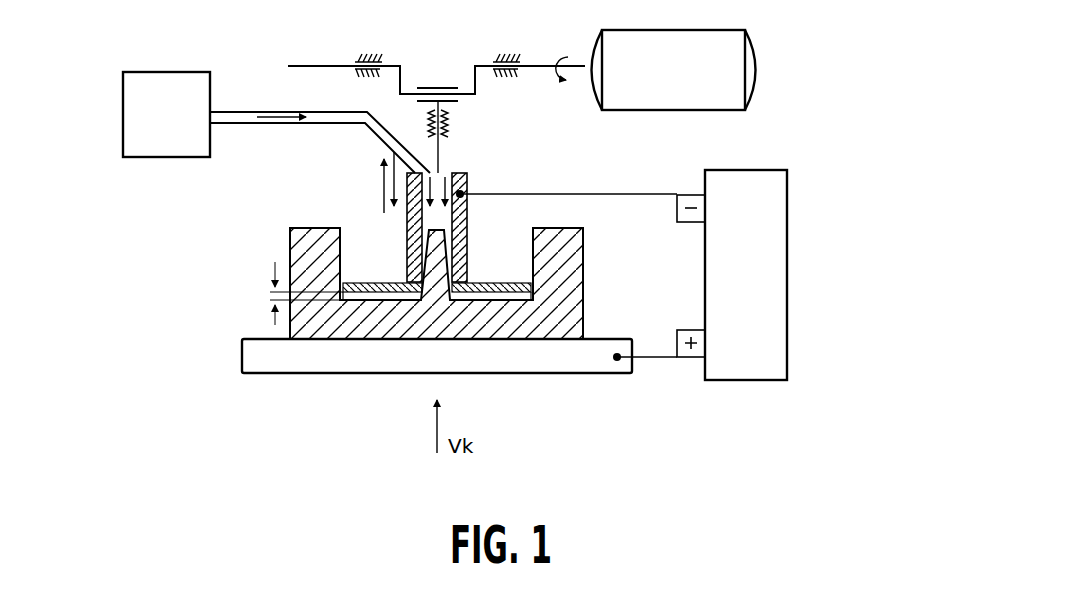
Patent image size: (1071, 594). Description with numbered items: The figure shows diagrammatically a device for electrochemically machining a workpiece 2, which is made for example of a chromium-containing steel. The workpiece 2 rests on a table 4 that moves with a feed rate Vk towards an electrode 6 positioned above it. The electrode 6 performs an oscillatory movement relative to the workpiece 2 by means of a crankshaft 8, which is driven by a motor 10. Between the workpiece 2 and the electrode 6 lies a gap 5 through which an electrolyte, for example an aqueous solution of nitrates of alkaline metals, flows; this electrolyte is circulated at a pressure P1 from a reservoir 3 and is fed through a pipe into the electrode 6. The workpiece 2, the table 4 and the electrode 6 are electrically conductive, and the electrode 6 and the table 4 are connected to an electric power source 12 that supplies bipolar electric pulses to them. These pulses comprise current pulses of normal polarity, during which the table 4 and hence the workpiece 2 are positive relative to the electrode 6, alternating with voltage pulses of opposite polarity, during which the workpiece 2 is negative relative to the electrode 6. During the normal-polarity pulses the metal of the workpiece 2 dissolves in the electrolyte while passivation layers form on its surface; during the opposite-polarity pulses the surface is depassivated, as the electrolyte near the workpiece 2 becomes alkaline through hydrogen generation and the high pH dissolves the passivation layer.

The workpiece 2 is at (308, 235).
The reservoir 3 is at (123, 121).
The table 4 is at (561, 374).
The gap 5 is at (270, 295).
The electrode 6 is at (462, 184).
The crankshaft 8 is at (383, 65).
The motor 10 is at (668, 102).
The electric power source 12 is at (778, 267).
The pressure P1 is at (325, 117).